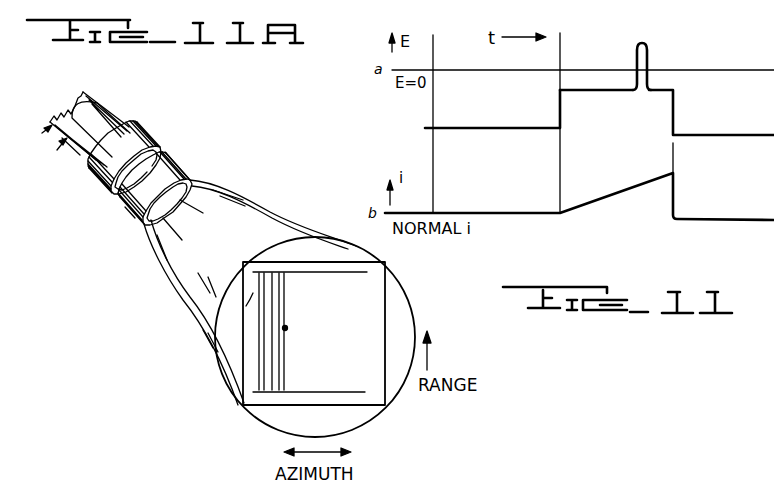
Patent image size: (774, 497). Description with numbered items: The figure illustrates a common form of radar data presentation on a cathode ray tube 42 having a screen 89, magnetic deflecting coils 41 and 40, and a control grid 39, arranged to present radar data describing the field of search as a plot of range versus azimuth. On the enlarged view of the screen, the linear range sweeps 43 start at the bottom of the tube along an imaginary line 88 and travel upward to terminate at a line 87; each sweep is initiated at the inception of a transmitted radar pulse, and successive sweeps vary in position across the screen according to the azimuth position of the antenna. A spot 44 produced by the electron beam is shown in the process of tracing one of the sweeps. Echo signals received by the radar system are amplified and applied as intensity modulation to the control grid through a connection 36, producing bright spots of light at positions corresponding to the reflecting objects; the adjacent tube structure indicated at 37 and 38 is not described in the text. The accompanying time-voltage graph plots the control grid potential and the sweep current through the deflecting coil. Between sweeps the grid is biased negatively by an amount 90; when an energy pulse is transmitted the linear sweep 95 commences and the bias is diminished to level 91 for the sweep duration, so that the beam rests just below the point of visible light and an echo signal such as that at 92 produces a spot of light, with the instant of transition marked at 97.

In FIG. 11A, the connection 36 is at (42, 143).
In FIG. 11A, the tube stem lower portion 37 is at (97, 183).
In FIG. 11A, the neck 38 is at (122, 221).
In FIG. 11A, the control grid 39 is at (100, 103).
In FIG. 11A, the magnetic deflecting coil 40 is at (155, 141).
In FIG. 11A, the magnetic deflecting coil 41 is at (185, 169).
In FIG. 11A, the cathode ray tube 42 is at (253, 200).
In FIG. 11A, the linear range sweeps 43 is at (281, 374).
In FIG. 11A, the spot 44 is at (287, 331).
In FIG. 11A, the line 87 is at (363, 278).
In FIG. 11A, the imaginary line 88 is at (355, 395).
In FIG. 11A, the screen 89 is at (253, 293).
In FIG. 11, the negative grid bias 90 is at (458, 123).
In FIG. 11, the diminished bias potential 91 is at (617, 95).
In FIG. 11, the echo signal 92 is at (646, 62).
In FIG. 11, the linear sweep 95 is at (608, 193).
In FIG. 11, the time marker 97 is at (561, 48).